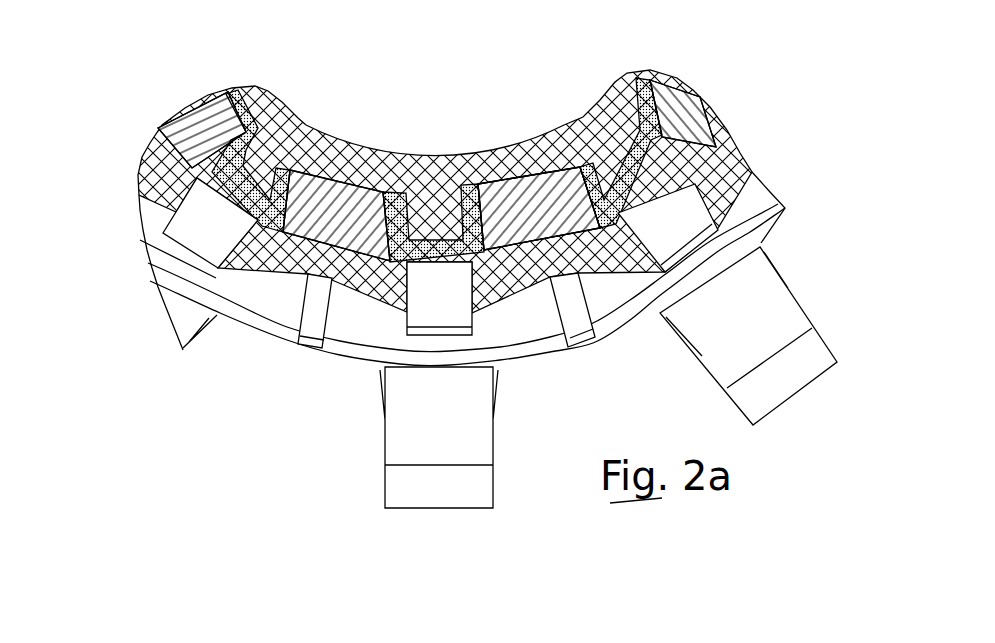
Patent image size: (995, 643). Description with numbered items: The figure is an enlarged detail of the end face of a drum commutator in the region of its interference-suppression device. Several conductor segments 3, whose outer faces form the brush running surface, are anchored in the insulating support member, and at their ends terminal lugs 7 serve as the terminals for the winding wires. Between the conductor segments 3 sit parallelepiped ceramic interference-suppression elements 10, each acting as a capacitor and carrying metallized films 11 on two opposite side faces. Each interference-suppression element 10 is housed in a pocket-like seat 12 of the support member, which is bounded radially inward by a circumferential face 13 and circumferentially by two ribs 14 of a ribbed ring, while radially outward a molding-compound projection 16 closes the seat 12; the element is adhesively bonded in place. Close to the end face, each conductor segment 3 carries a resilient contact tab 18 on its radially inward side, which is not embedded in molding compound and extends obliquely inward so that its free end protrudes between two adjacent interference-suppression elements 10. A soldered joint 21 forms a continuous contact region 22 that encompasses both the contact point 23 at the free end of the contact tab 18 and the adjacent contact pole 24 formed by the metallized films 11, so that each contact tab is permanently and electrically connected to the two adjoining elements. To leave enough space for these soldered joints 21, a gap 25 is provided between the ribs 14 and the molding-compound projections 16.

The conductor segment 3 is at (257, 300).
The terminal lug 7 is at (767, 315).
The interference-suppression element 10 is at (533, 197).
The metallized film 11 is at (583, 175).
The pocket-like seat 12 is at (295, 148).
The circumferential face 13 is at (395, 157).
The rib 14 is at (272, 152).
The molding-compound projection 16 is at (250, 268).
The resilient contact tab 18 is at (205, 217).
The soldered joint 21 is at (205, 171).
The continuous contact region 22 is at (683, 188).
The contact point 23 is at (447, 263).
The contact pole 24 is at (692, 115).
The gap 25 is at (387, 263).